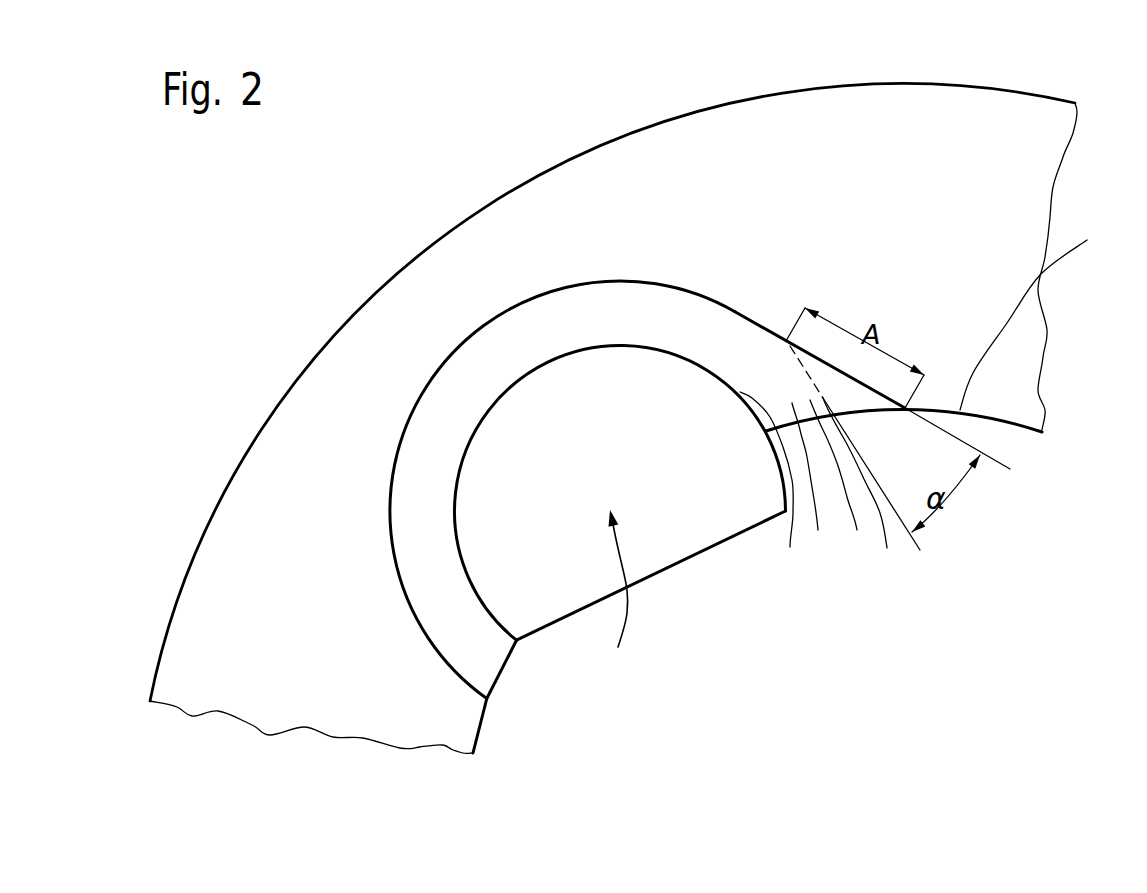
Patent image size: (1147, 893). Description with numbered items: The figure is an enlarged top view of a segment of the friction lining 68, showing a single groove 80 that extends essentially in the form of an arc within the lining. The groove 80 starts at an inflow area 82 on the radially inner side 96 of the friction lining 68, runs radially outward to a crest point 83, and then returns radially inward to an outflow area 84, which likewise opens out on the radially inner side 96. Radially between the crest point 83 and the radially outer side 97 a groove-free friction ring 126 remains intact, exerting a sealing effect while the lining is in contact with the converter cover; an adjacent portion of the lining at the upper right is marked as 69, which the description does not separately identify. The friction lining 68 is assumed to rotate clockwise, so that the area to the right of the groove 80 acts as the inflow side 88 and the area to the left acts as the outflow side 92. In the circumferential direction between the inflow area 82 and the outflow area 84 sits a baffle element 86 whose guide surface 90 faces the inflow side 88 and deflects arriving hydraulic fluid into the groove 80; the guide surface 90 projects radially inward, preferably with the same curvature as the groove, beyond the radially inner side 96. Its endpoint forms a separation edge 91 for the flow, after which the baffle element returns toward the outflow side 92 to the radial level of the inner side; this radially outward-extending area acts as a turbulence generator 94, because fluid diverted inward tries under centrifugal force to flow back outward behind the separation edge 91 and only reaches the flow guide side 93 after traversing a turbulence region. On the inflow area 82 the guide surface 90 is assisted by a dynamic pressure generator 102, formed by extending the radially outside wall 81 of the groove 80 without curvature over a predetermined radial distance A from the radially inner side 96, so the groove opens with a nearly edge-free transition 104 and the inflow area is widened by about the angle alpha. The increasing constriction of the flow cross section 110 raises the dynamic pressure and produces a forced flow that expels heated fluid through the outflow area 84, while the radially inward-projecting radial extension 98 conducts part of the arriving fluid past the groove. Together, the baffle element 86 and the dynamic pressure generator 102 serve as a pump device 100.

The friction lining 68 is at (273, 352).
The housing flange 69 is at (942, 112).
The groove 80 is at (572, 317).
The radially outside wall 81 is at (683, 287).
The inflow area 82 is at (857, 530).
The crest point 83 is at (493, 317).
The outflow area 84 is at (485, 665).
The baffle element 86 is at (633, 530).
The inflow side 88 is at (997, 410).
The guide surface 90 is at (818, 530).
The separation edge 91 is at (790, 547).
The outflow side 92 is at (482, 733).
The flow guide side 93 is at (615, 587).
The turbulence generator 94 is at (752, 530).
The radially inner side 96 is at (473, 738).
The radially outer side 97 is at (725, 103).
The radial extension 98 is at (780, 468).
The pump device 100 is at (617, 593).
The dynamic pressure generator 102 is at (824, 362).
The edge-free transition 104 is at (905, 408).
The flow cross section 110 is at (869, 490).
The groove-free friction ring 126 is at (417, 278).